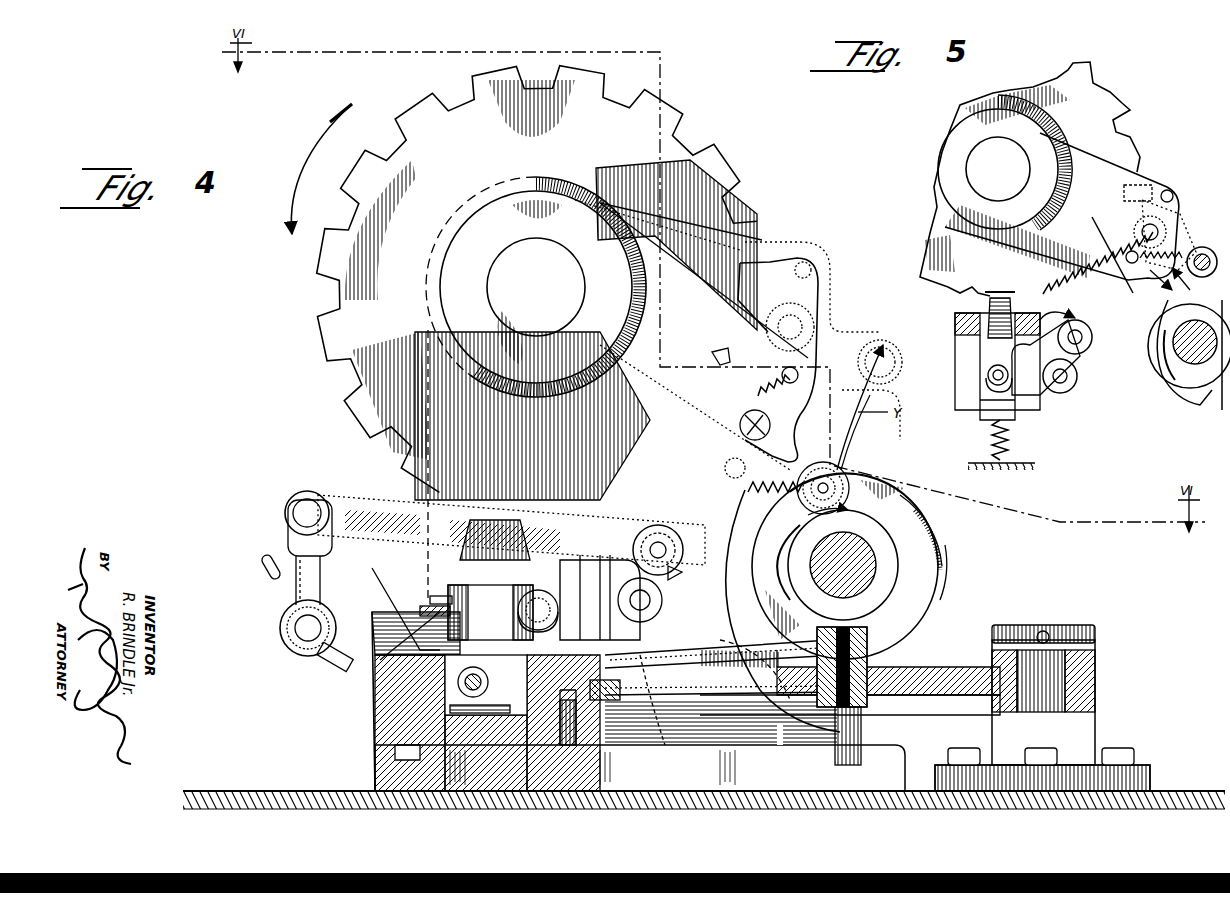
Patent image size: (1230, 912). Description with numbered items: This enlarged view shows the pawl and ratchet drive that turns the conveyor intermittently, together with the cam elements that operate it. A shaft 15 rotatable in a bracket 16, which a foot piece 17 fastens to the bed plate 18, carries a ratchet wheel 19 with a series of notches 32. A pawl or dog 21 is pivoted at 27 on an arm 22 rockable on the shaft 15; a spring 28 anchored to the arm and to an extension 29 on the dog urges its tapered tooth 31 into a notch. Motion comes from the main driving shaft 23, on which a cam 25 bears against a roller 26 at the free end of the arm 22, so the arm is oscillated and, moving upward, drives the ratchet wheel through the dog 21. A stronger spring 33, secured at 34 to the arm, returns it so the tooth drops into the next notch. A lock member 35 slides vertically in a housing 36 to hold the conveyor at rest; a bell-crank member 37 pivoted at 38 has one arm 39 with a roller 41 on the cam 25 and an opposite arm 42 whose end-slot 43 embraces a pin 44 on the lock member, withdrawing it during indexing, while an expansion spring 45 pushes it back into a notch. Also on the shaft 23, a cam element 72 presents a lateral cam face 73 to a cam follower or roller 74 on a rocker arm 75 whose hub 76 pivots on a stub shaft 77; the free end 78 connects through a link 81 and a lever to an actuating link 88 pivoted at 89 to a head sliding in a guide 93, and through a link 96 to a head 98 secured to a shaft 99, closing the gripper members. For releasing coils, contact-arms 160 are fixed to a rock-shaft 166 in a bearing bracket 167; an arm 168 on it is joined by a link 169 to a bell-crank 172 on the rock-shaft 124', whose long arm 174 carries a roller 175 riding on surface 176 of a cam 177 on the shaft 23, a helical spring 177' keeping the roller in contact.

In FIG. 4, the shaft 15 is at (560, 256).
In FIG. 5, the shaft 15 is at (1004, 170).
In FIG. 4, the bracket 16 is at (470, 202).
In FIG. 4, the foot piece 17 is at (372, 722).
In FIG. 4, the bed plate 18 is at (232, 791).
In FIG. 5, the bed plate 18 is at (1032, 465).
In FIG. 4, the ratchet wheel 19 is at (712, 160).
In FIG. 5, the ratchet wheel 19 is at (1138, 144).
In FIG. 4, the pawl or dog 21 is at (814, 292).
In FIG. 5, the pawl or dog 21 is at (1184, 208).
In FIG. 4, the arm 22 is at (700, 294).
In FIG. 5, the arm 22 is at (1108, 168).
In FIG. 4, the main driving shaft 23 is at (868, 552).
In FIG. 5, the main driving shaft 23 is at (1182, 362).
In FIG. 4, the cam 25 is at (640, 768).
In FIG. 5, the cam 25 is at (1205, 405).
In FIG. 4, the roller 26 is at (842, 472).
In FIG. 5, the roller 26 is at (1203, 247).
In FIG. 4, the pivot 27 is at (745, 438).
In FIG. 5, the pivot 27 is at (1166, 232).
In FIG. 4, the spring 28 is at (805, 476).
In FIG. 5, the spring 28 is at (1134, 264).
In FIG. 4, the extension 29 is at (748, 488).
In FIG. 5, the extension 29 is at (1082, 280).
In FIG. 4, the tapered end or tooth 31 is at (712, 356).
In FIG. 5, the tapered end or tooth 31 is at (1152, 190).
In FIG. 4, the notches 32 is at (740, 222).
In FIG. 4, the spring 33 is at (655, 462).
In FIG. 5, the spring 33 is at (1092, 220).
In FIG. 4, the securing point 34 is at (798, 372).
In FIG. 5, the securing point 34 is at (1174, 193).
In FIG. 4, the lock member 35 is at (542, 456).
In FIG. 5, the lock member 35 is at (985, 295).
In FIG. 4, the housing 36 is at (448, 586).
In FIG. 5, the housing 36 is at (955, 340).
In FIG. 4, the bell-crank member 37 is at (662, 598).
In FIG. 5, the bell-crank member 37 is at (1078, 366).
In FIG. 4, the pivot 38 is at (655, 618).
In FIG. 5, the pivot 38 is at (1068, 376).
In FIG. 4, the arm 39 is at (718, 570).
In FIG. 4, the roller 41 is at (660, 525).
In FIG. 5, the roller 41 is at (1092, 334).
In FIG. 4, the arm 42 is at (560, 580).
In FIG. 5, the arm 42 is at (1040, 394).
In FIG. 4, the end-slot 43 is at (518, 604).
In FIG. 5, the end-slot 43 is at (988, 374).
In FIG. 4, the pin 44 is at (535, 592).
In FIG. 5, the pin 44 is at (988, 386).
In FIG. 5, the expansion spring 45 is at (1010, 442).
In FIG. 4, the cam element 72 is at (944, 576).
In FIG. 4, the lateral cam face 73 is at (882, 510).
In FIG. 4, the cam follower or roller 74 is at (888, 658).
In FIG. 4, the rocker arm 75 is at (960, 672).
In FIG. 4, the hub 76 is at (1092, 676).
In FIG. 4, the stub shaft 77 is at (1050, 630).
In FIG. 4, the free end 78 is at (580, 748).
In FIG. 4, the link 81 is at (599, 703).
In FIG. 4, the actuating link 88 is at (425, 606).
In FIG. 4, the pivot 89 is at (432, 596).
In FIG. 4, the guide 93 is at (380, 680).
In FIG. 4, the link 96 is at (372, 576).
In FIG. 4, the head 98 is at (440, 732).
In FIG. 4, the shaft 99 is at (458, 690).
In FIG. 4, the rock-shaft 124' is at (670, 717).
In FIG. 4, the contact-arms 160 is at (268, 568).
In FIG. 4, the rock-shaft 166 is at (300, 632).
In FIG. 4, the bearing bracket 167 is at (336, 668).
In FIG. 4, the arm 168 is at (288, 545).
In FIG. 4, the link 169 is at (372, 500).
In FIG. 4, the bell-crank 172 is at (700, 648).
In FIG. 4, the long arm 174 is at (748, 640).
In FIG. 4, the roller 175 is at (815, 605).
In FIG. 4, the cam surface 176 is at (944, 560).
In FIG. 4, the cam 177 is at (950, 530).
In FIG. 4, the helical spring 177' is at (264, 596).